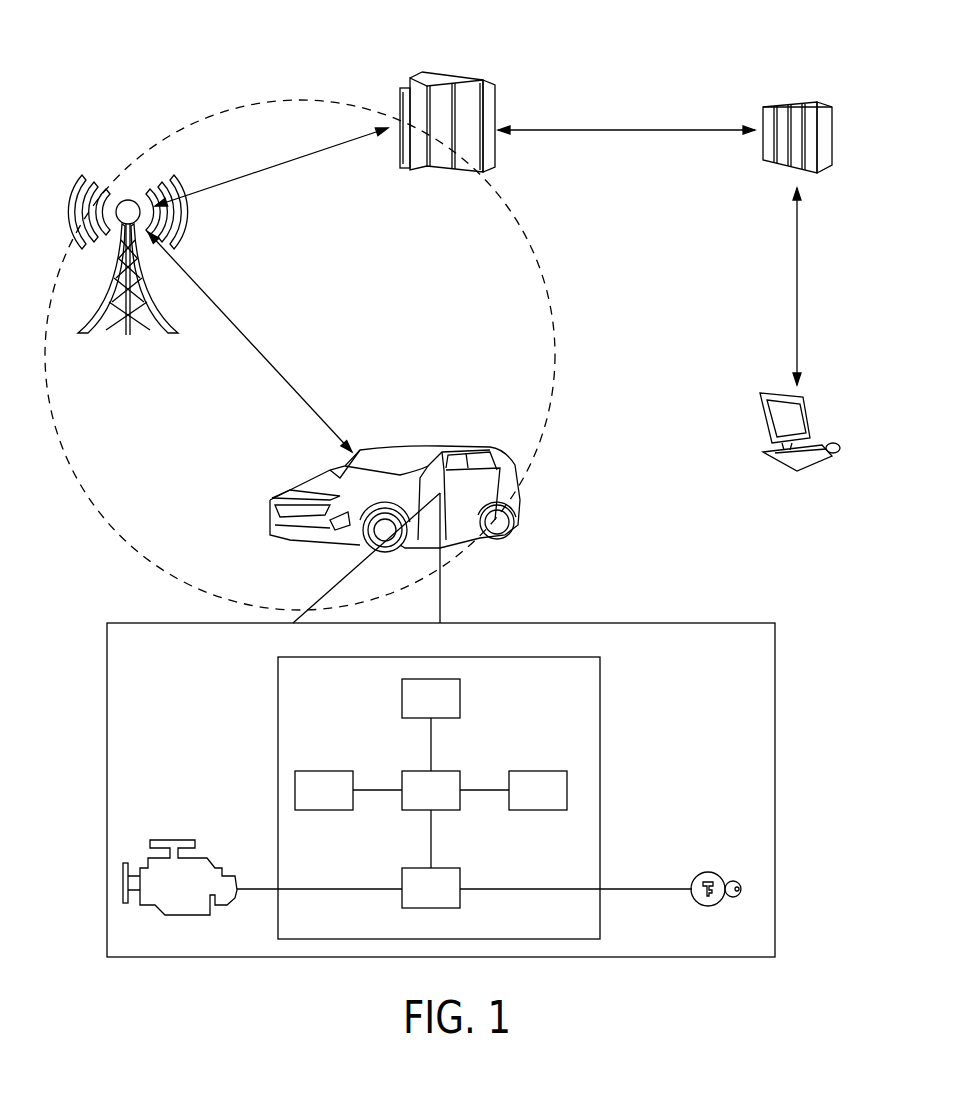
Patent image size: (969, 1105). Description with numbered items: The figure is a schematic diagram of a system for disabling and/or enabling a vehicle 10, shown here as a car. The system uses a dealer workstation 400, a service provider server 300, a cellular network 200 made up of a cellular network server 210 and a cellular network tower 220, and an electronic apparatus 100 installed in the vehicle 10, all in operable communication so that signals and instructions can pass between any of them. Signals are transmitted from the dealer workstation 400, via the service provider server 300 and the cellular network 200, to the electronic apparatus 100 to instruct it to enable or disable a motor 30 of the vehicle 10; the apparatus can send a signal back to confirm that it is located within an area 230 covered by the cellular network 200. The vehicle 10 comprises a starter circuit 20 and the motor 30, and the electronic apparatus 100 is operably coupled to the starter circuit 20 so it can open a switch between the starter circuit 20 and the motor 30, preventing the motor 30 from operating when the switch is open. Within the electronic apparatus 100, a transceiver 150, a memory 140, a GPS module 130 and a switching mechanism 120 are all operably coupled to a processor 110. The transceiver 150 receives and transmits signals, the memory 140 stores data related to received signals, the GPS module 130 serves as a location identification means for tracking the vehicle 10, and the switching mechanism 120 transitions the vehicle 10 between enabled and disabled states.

The vehicle 10 is at (497, 455).
The starter circuit 20 is at (680, 892).
The motor 30 is at (172, 840).
The electronic apparatus 100 is at (439, 798).
The processor 110 is at (431, 790).
The switching mechanism 120 is at (431, 888).
The GPS module 130 is at (324, 790).
The memory 140 is at (538, 790).
The transceiver 150 is at (431, 698).
The cellular network 200 is at (420, 42).
The cellular network server 210 is at (447, 82).
The cellular network tower 220 is at (128, 199).
The area covered by the cellular network 230 is at (527, 265).
The service provider server 300 is at (787, 105).
The dealer workstation 400 is at (815, 462).